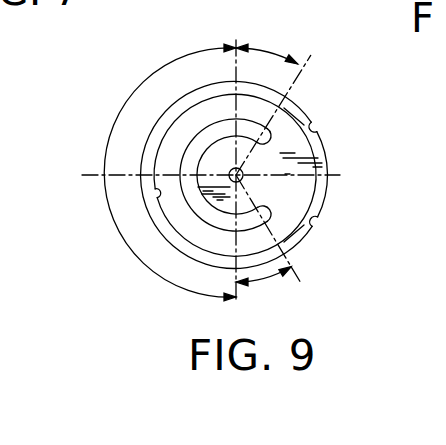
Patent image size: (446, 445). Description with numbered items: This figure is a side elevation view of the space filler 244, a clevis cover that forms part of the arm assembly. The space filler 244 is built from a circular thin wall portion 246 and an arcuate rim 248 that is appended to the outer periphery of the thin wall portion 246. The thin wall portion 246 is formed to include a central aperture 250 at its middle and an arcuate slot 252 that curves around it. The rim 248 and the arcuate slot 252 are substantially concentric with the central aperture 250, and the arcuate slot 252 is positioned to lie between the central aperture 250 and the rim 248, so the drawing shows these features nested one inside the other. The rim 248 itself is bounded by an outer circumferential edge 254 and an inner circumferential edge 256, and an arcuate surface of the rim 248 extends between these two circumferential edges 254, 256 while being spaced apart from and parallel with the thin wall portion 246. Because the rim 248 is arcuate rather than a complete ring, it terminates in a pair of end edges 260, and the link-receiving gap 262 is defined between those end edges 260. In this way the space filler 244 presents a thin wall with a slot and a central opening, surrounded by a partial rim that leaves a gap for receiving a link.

The space filler 244 is at (331, 103).
The thin wall portion 246 is at (203, 228).
The arcuate rim 248 is at (163, 224).
The central aperture 250 is at (246, 178).
The arcuate slot 252 is at (192, 151).
The outer circumferential edge 254 is at (192, 108).
The inner circumferential edge 256 is at (158, 194).
The end edges 260 is at (318, 130).
The link-receiving gap 262 is at (325, 158).